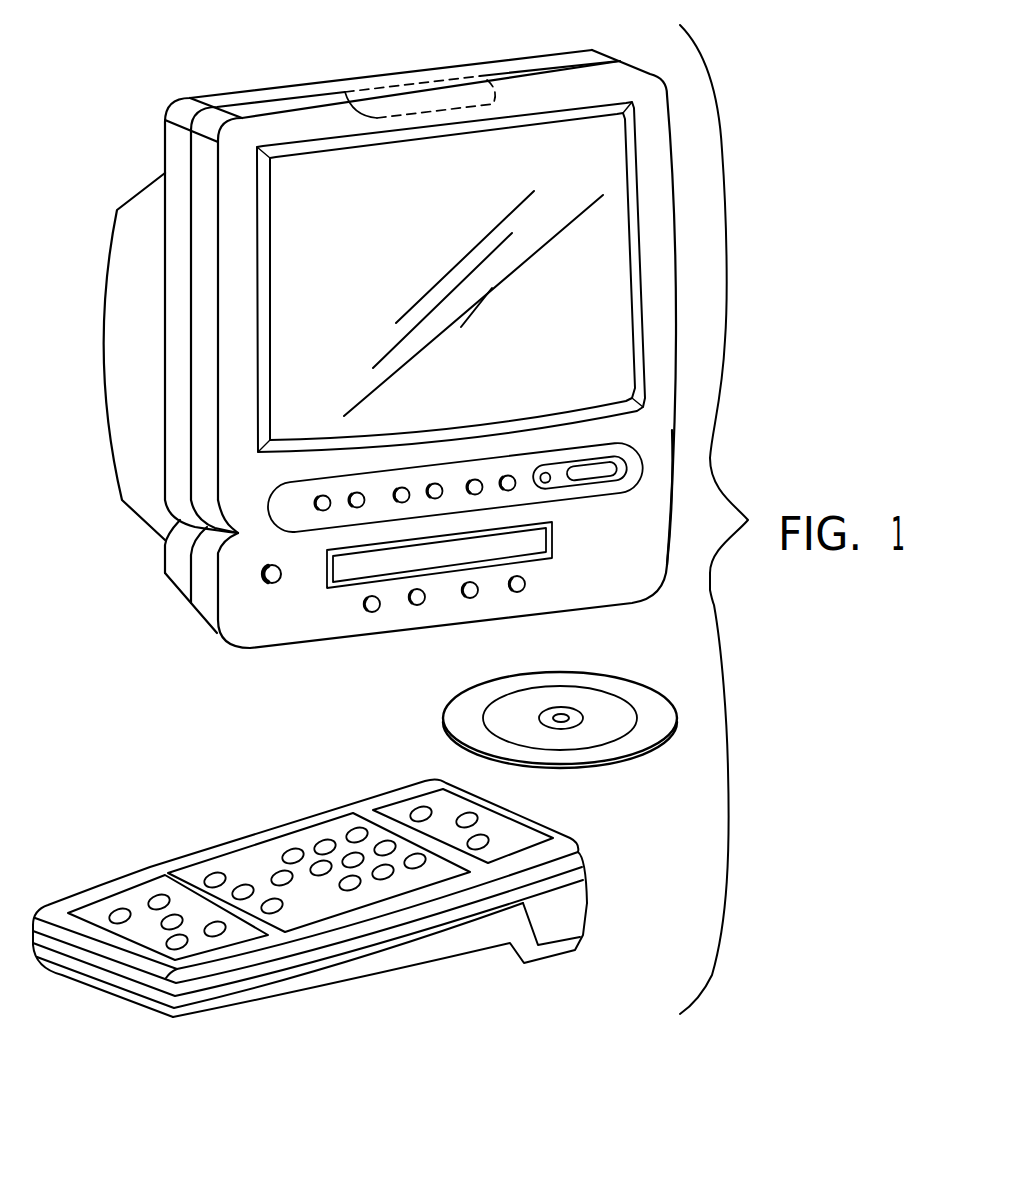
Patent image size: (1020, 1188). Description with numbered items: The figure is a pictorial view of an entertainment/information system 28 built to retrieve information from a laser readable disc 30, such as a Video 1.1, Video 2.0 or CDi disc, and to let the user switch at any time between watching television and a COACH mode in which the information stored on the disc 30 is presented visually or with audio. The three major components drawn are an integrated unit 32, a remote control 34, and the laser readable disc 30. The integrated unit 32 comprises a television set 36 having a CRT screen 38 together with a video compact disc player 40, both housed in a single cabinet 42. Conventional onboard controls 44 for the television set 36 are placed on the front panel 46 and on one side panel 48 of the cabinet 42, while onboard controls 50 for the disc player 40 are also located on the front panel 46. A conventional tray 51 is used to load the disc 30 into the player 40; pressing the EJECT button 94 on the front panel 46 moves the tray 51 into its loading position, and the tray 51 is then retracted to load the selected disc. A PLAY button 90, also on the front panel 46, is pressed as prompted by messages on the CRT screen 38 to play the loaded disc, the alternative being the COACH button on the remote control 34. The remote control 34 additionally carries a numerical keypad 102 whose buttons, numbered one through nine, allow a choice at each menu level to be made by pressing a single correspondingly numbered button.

The system 28 is at (740, 280).
The laser readable disc 30 is at (440, 720).
The integrated unit 32 is at (282, 73).
The remote control 34 is at (310, 886).
The television set 36 is at (101, 365).
The CRT screen 38 is at (376, 220).
The video compact disc player 40 is at (335, 605).
The cabinet 42 is at (668, 132).
The onboard controls 44 is at (247, 503).
The front panel 46 is at (668, 345).
The side panel 48 is at (677, 437).
The onboard controls 50 is at (538, 585).
The tray 51 is at (552, 538).
The PLAY button 90 is at (262, 574).
The EJECT button 94 is at (370, 614).
The numerical keypad 102 is at (310, 826).